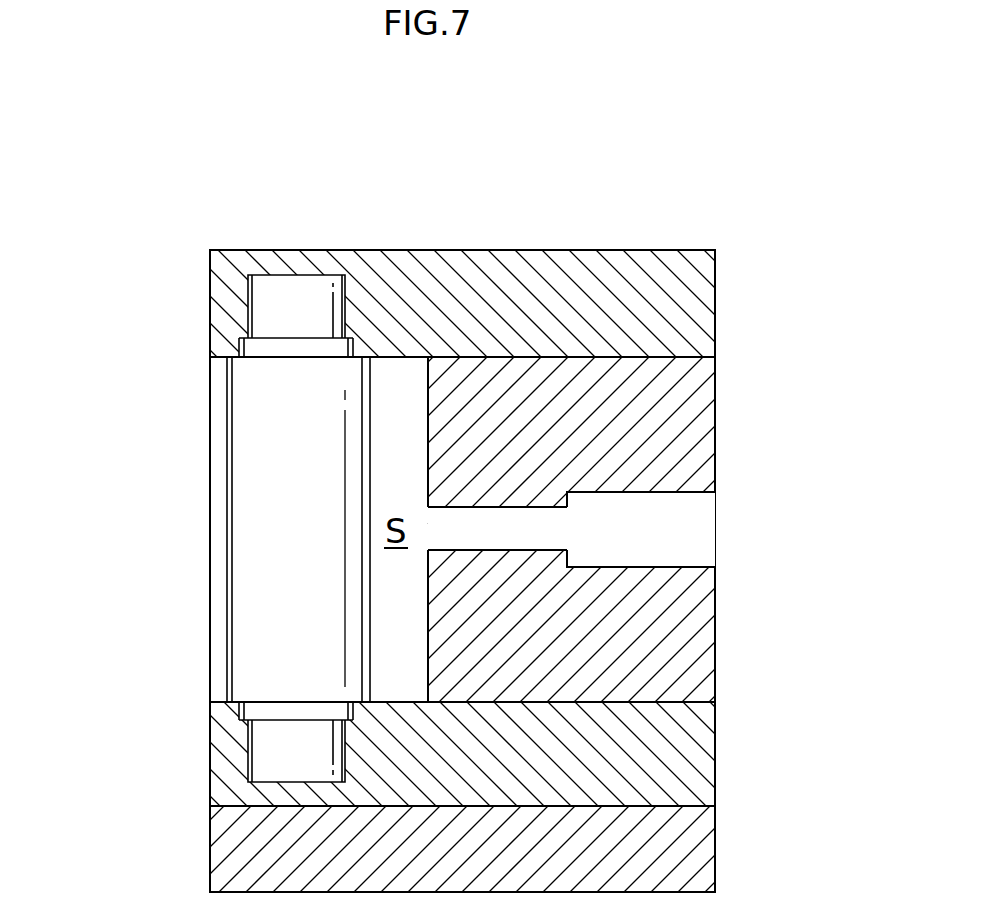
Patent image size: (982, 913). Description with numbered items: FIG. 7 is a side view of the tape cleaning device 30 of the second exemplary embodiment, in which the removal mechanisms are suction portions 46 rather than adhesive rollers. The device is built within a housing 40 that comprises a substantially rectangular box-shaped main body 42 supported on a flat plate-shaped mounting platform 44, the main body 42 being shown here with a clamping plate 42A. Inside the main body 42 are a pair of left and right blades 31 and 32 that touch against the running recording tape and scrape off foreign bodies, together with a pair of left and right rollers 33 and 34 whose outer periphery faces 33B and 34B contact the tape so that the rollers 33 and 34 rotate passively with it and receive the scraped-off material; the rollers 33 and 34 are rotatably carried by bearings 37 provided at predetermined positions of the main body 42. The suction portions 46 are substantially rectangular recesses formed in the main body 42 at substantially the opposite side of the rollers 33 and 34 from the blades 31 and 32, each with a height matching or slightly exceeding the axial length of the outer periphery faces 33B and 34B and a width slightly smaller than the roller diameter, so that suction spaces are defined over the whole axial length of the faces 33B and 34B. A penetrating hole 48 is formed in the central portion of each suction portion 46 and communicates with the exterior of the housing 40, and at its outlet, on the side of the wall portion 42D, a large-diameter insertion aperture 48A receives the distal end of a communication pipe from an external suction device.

The tape cleaning device 30 is at (506, 157).
The housing 40 is at (735, 244).
The main body 42 is at (617, 529).
The clamping plate 42A is at (223, 260).
The wall portion 42D is at (717, 622).
The mounting platform 44 is at (707, 843).
The suction portions 46 is at (428, 402).
The penetrating hole 48 is at (489, 508).
The insertion aperture 48A is at (713, 496).
The bearings 37 is at (270, 304).
The blade 32 is at (215, 529).
The blade 31 is at (208, 498).
The roller 34 is at (151, 529).
The roller 33 is at (216, 442).
The outer periphery face 34B is at (197, 538).
The outer periphery face 33B is at (280, 542).